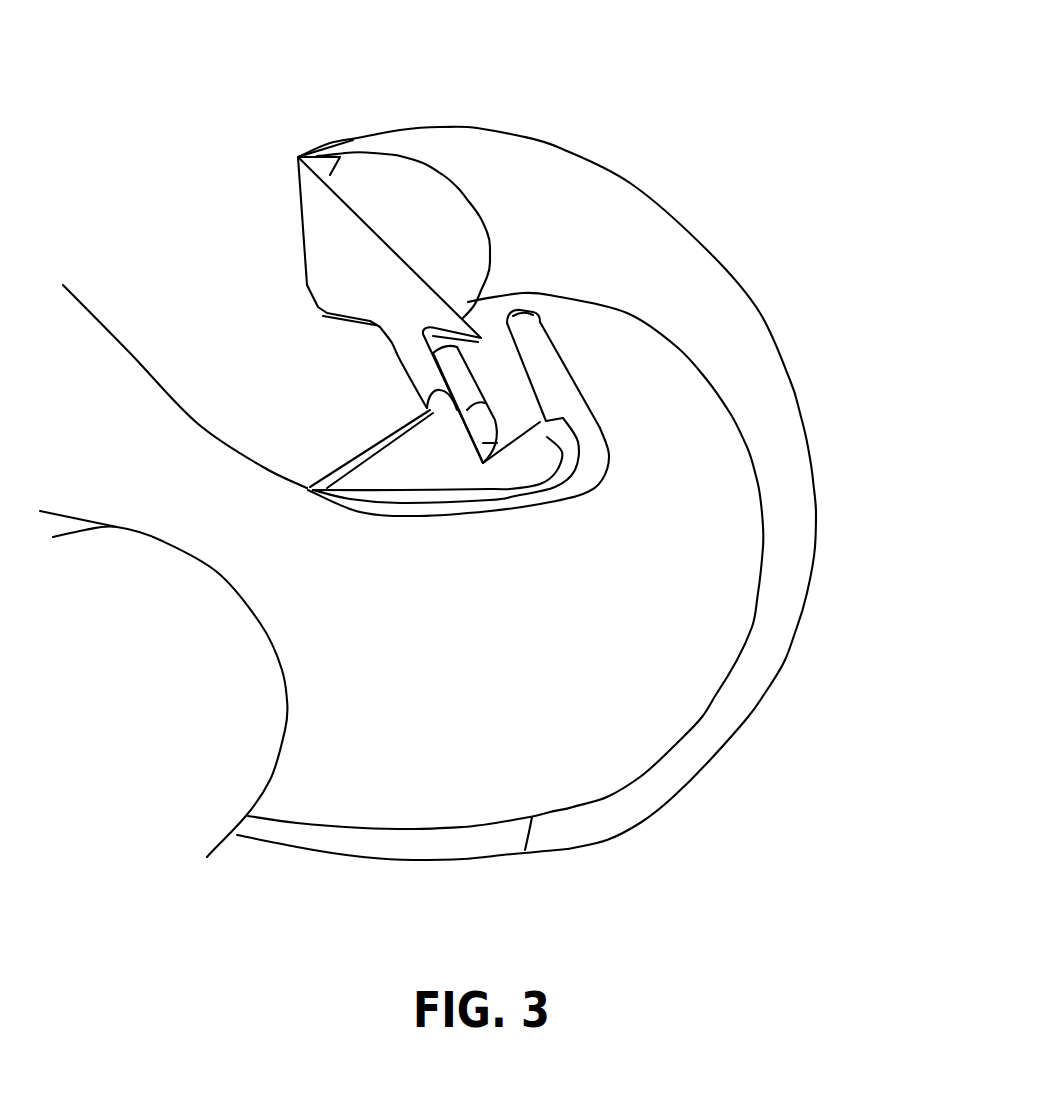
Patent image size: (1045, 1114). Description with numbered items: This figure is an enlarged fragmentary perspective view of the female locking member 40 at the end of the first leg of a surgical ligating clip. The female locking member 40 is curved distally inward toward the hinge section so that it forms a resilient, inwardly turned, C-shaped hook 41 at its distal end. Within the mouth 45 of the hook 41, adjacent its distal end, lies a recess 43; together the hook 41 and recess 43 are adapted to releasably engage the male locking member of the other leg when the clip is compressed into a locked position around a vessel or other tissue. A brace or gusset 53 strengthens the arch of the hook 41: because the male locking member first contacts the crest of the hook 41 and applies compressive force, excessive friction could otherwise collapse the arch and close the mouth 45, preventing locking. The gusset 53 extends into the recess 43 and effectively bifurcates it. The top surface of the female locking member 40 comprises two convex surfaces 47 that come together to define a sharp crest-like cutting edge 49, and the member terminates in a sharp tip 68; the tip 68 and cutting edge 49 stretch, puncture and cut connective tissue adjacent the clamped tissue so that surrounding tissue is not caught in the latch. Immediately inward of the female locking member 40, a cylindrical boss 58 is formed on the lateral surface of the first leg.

The female locking member 40 is at (583, 475).
The hook 41 is at (807, 627).
The recess 43 is at (552, 375).
The mouth 45 is at (505, 522).
The convex surfaces 47 is at (593, 217).
The cutting edge 49 is at (400, 130).
The gusset 53 is at (412, 480).
The cylindrical boss 58 is at (183, 737).
The sharp tip 68 is at (297, 158).